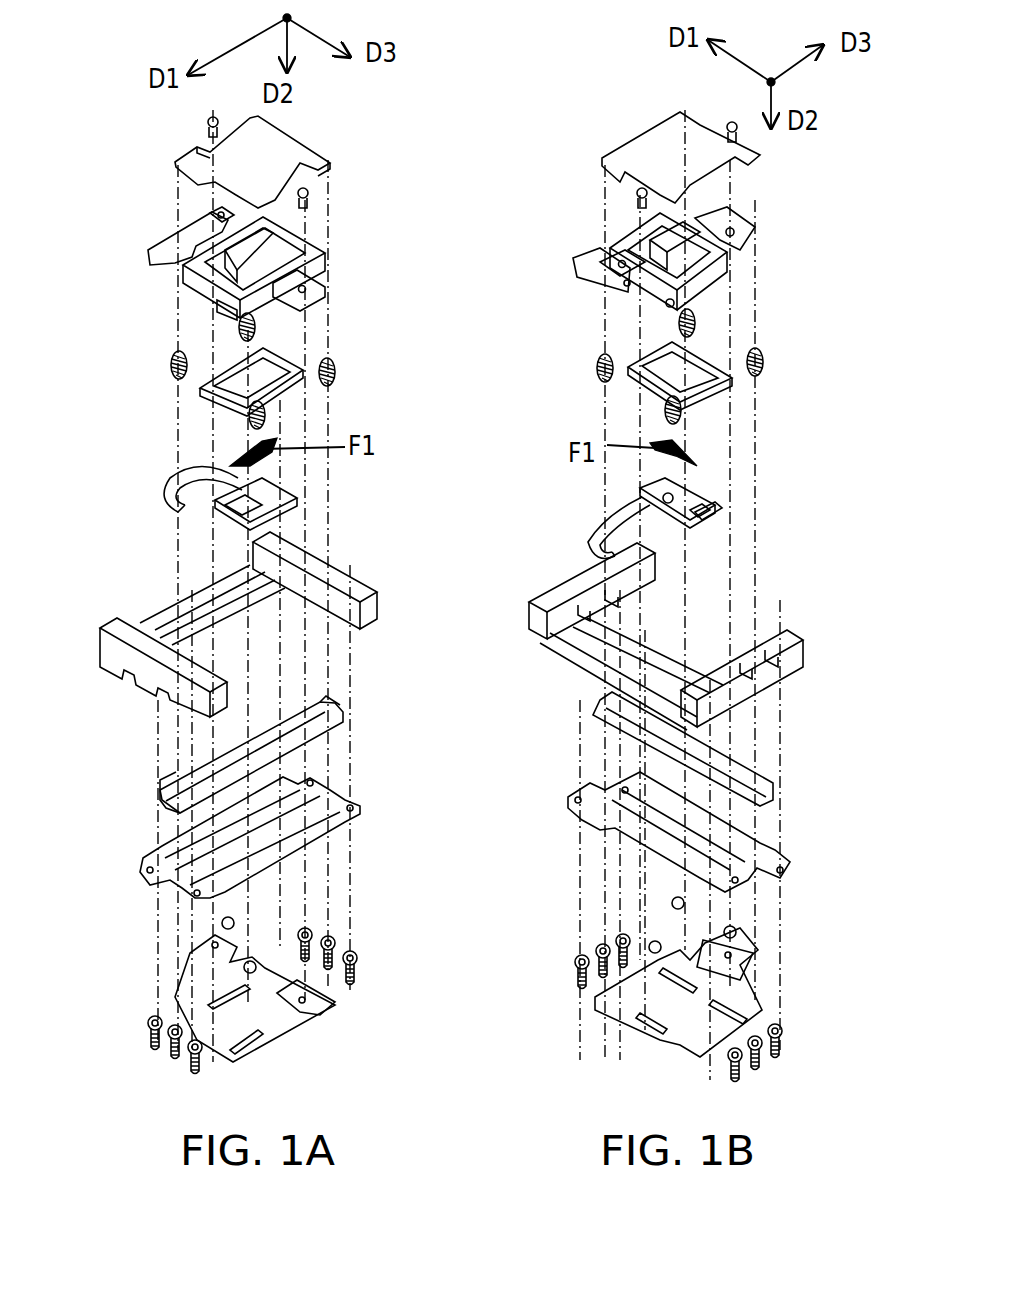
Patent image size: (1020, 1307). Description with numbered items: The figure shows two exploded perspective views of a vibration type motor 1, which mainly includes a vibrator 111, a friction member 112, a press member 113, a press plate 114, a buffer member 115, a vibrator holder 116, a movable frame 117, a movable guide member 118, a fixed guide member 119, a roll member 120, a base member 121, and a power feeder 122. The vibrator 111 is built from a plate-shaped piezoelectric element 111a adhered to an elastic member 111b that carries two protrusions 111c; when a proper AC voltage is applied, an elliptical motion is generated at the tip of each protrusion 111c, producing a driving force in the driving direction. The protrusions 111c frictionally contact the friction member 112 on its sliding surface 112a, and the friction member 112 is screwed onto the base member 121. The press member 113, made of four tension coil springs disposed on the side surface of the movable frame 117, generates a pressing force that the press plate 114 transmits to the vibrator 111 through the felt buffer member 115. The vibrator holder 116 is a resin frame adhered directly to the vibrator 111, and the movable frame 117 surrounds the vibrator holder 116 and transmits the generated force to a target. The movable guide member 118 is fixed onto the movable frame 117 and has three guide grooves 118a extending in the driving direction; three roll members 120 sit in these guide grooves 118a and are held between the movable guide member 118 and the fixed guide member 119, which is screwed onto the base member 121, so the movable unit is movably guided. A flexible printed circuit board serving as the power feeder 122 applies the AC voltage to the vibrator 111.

In FIG. 1A, the vibration type motor 1 is at (565, 131).
In FIG. 1B, the vibration type motor 1 is at (468, 130).
In FIG. 1A, the vibrator 111 is at (300, 493).
In FIG. 1B, the vibrator 111 is at (630, 495).
In FIG. 1A, the piezoelectric element 111a is at (232, 508).
In FIG. 1B, the elastic member 111b is at (713, 518).
In FIG. 1B, the protrusions 111c is at (668, 498).
In FIG. 1A, the friction member 112 is at (318, 722).
In FIG. 1B, the friction member 112 is at (637, 735).
In FIG. 1A, the sliding surface 112a is at (200, 783).
In FIG. 1A, the press member 113 is at (320, 378).
In FIG. 1B, the press member 113 is at (610, 378).
In FIG. 1A, the press plate 114 is at (323, 163).
In FIG. 1B, the press plate 114 is at (600, 160).
In FIG. 1A, the buffer member 115 is at (258, 250).
In FIG. 1B, the buffer member 115 is at (668, 258).
In FIG. 1A, the vibrator holder 116 is at (305, 370).
In FIG. 1B, the vibrator holder 116 is at (628, 372).
In FIG. 1A, the movable frame 117 is at (322, 270).
In FIG. 1B, the movable frame 117 is at (595, 270).
In FIG. 1A, the movable guide member 118 is at (322, 1000).
In FIG. 1B, the movable guide member 118 is at (612, 1008).
In FIG. 1A, the guide grooves 118a is at (247, 1033).
In FIG. 1B, the guide grooves 118a is at (653, 1020).
In FIG. 1A, the fixed guide member 119 is at (330, 805).
In FIG. 1B, the fixed guide member 119 is at (640, 823).
In FIG. 1A, the roll member 120 is at (242, 921).
In FIG. 1B, the roll member 120 is at (724, 931).
In FIG. 1A, the base member 121 is at (378, 612).
In FIG. 1B, the base member 121 is at (545, 610).
In FIG. 1A, the power feeder 122 is at (167, 488).
In FIG. 1B, the power feeder 122 is at (605, 522).